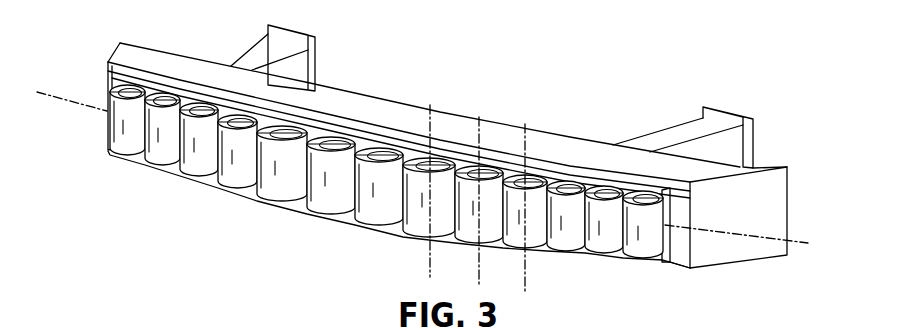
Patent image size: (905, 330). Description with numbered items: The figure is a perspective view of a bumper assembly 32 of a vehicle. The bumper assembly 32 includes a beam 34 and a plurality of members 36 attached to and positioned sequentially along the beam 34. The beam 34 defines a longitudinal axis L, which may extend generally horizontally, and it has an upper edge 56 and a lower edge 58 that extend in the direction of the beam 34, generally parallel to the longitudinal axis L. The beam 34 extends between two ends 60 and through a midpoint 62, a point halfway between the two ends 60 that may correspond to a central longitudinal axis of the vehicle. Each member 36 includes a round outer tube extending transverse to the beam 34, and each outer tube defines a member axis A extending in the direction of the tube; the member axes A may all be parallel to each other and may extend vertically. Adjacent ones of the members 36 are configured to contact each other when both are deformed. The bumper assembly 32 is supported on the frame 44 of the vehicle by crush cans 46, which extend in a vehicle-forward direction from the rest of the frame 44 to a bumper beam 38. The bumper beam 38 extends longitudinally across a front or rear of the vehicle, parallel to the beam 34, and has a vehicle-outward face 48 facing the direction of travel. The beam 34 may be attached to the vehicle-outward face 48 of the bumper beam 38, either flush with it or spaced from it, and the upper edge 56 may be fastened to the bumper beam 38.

The bumper assembly 32 is at (588, 58).
The beam 34 is at (672, 235).
The members 36 is at (160, 166).
The bumper beam 38 is at (383, 101).
The frame 44 is at (201, 52).
The crush cans 46 is at (248, 40).
The vehicle-outward face 48 is at (707, 238).
The upper edge 56 is at (540, 162).
The lower edge 58 is at (663, 270).
The ends 60 is at (107, 78).
The midpoint 62 is at (448, 117).
The longitudinal axis L is at (429, 174).
The member axis A is at (478, 188).